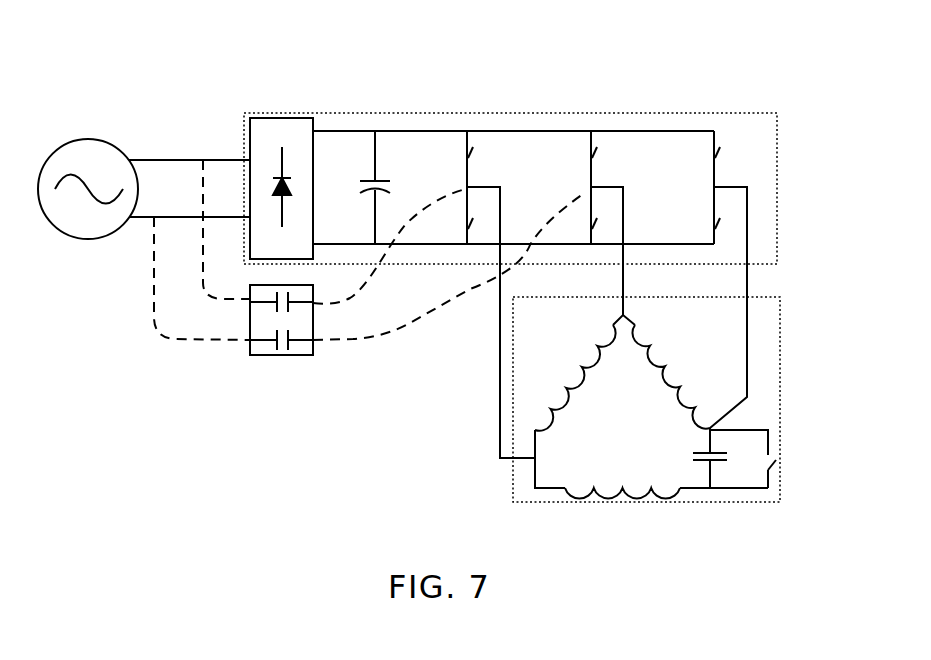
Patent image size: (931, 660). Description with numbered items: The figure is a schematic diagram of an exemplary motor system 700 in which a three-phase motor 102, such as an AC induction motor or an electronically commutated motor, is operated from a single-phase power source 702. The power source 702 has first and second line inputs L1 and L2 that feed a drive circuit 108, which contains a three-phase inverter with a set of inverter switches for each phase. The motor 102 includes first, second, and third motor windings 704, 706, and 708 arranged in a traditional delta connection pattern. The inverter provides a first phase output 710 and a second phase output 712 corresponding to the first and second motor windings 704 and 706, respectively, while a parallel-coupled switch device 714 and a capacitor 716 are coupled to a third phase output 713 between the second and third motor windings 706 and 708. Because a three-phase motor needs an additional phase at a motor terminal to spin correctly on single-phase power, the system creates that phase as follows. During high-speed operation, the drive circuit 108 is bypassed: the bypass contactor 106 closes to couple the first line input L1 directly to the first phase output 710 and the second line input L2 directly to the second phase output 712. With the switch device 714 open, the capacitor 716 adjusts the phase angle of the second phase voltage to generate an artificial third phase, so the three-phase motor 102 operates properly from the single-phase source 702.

The motor system 700 is at (626, 64).
The power source 702 is at (85, 142).
The first line input L1 is at (147, 161).
The second line input L2 is at (147, 218).
The drive circuit 108 is at (698, 113).
The bypass contactor 106 is at (302, 357).
The first phase output 710 is at (470, 187).
The second phase output 712 is at (594, 187).
The third phase output 713 is at (717, 187).
The motor 102 is at (727, 502).
The first motor winding 704 is at (583, 324).
The second motor winding 706 is at (660, 326).
The third motor winding 708 is at (637, 468).
The capacitor 716 is at (700, 448).
The switch device 714 is at (779, 462).